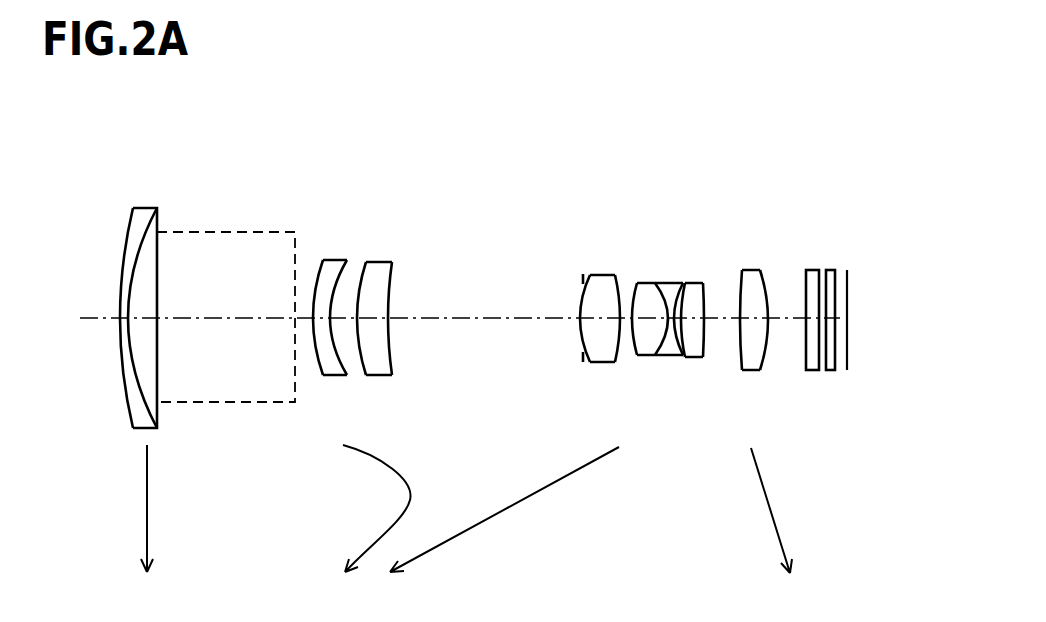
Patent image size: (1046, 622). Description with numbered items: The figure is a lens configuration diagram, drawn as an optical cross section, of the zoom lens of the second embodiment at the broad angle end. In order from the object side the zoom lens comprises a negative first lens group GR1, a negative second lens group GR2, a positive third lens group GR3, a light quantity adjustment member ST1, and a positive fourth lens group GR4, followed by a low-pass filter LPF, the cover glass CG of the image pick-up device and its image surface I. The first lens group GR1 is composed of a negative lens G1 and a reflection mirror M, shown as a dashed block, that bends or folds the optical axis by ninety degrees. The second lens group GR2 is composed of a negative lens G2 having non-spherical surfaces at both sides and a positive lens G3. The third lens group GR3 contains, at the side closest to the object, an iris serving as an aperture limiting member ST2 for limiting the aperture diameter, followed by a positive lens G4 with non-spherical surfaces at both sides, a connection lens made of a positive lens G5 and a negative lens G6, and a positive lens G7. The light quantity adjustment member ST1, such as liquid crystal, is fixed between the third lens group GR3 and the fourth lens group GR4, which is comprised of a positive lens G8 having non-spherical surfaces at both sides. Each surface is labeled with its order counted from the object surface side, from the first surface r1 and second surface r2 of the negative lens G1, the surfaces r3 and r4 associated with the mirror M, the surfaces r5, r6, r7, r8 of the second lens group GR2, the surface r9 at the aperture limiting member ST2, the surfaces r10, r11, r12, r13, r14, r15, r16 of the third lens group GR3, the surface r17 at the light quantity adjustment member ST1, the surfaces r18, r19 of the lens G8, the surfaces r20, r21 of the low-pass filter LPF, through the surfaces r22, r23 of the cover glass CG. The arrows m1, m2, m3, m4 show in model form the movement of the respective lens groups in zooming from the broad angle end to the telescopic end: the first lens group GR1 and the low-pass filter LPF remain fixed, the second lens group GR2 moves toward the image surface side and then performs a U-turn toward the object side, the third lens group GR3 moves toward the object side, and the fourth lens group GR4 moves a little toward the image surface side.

The first lens group GR1 is at (287, 136).
The second lens group GR2 is at (402, 136).
The third lens group GR3 is at (705, 136).
The fourth lens group GR4 is at (777, 136).
The negative lens of first lens group G1 is at (143, 287).
The negative lens of second lens group G2 is at (337, 261).
The positive lens of second lens group G3 is at (392, 261).
The positive lens of third lens group G4 is at (595, 254).
The positive lens of connection lens G5 is at (645, 275).
The negative lens of connection lens G6 is at (667, 251).
The positive lens of third lens group G7 is at (691, 277).
The positive lens of fourth lens group G8 is at (771, 258).
The reflection mirror M is at (213, 390).
The light quantity adjustment member ST1 is at (716, 357).
The aperture limiting member ST2 is at (583, 357).
The low-pass filter LPF is at (808, 279).
The cover glass CG is at (835, 369).
The image surface I is at (848, 352).
The movement arrow of first lens group m1 is at (148, 498).
The movement arrow of second lens group m2 is at (383, 463).
The movement arrow of third lens group m3 is at (503, 510).
The movement arrow of fourth lens group m4 is at (768, 498).
The first plane surface r1 is at (120, 270).
The second plane surface r2 is at (147, 250).
The third plane surface r3 is at (158, 383).
The fourth plane surface r4 is at (293, 383).
The fifth plane surface r5 is at (315, 267).
The sixth plane surface r6 is at (348, 272).
The seventh plane surface r7 is at (363, 267).
The eighth plane surface r8 is at (392, 282).
The ninth plane surface r9 is at (583, 282).
The tenth plane surface r10 is at (587, 277).
The eleventh plane surface r11 is at (615, 275).
The twelfth plane surface r12 is at (632, 357).
The thirteenth plane surface r13 is at (658, 353).
The fourteenth plane surface r14 is at (674, 284).
The fifteenth plane surface r15 is at (690, 282).
The sixteenth plane surface r16 is at (692, 359).
The seventeenth plane surface r17 is at (717, 286).
The eighteenth plane surface r18 is at (742, 272).
The nineteenth plane surface r19 is at (765, 278).
The twentieth plane surface r20 is at (806, 371).
The twenty-first plane surface r21 is at (823, 371).
The twenty-second plane surface r22 is at (826, 270).
The twenty-third plane surface r23 is at (837, 272).